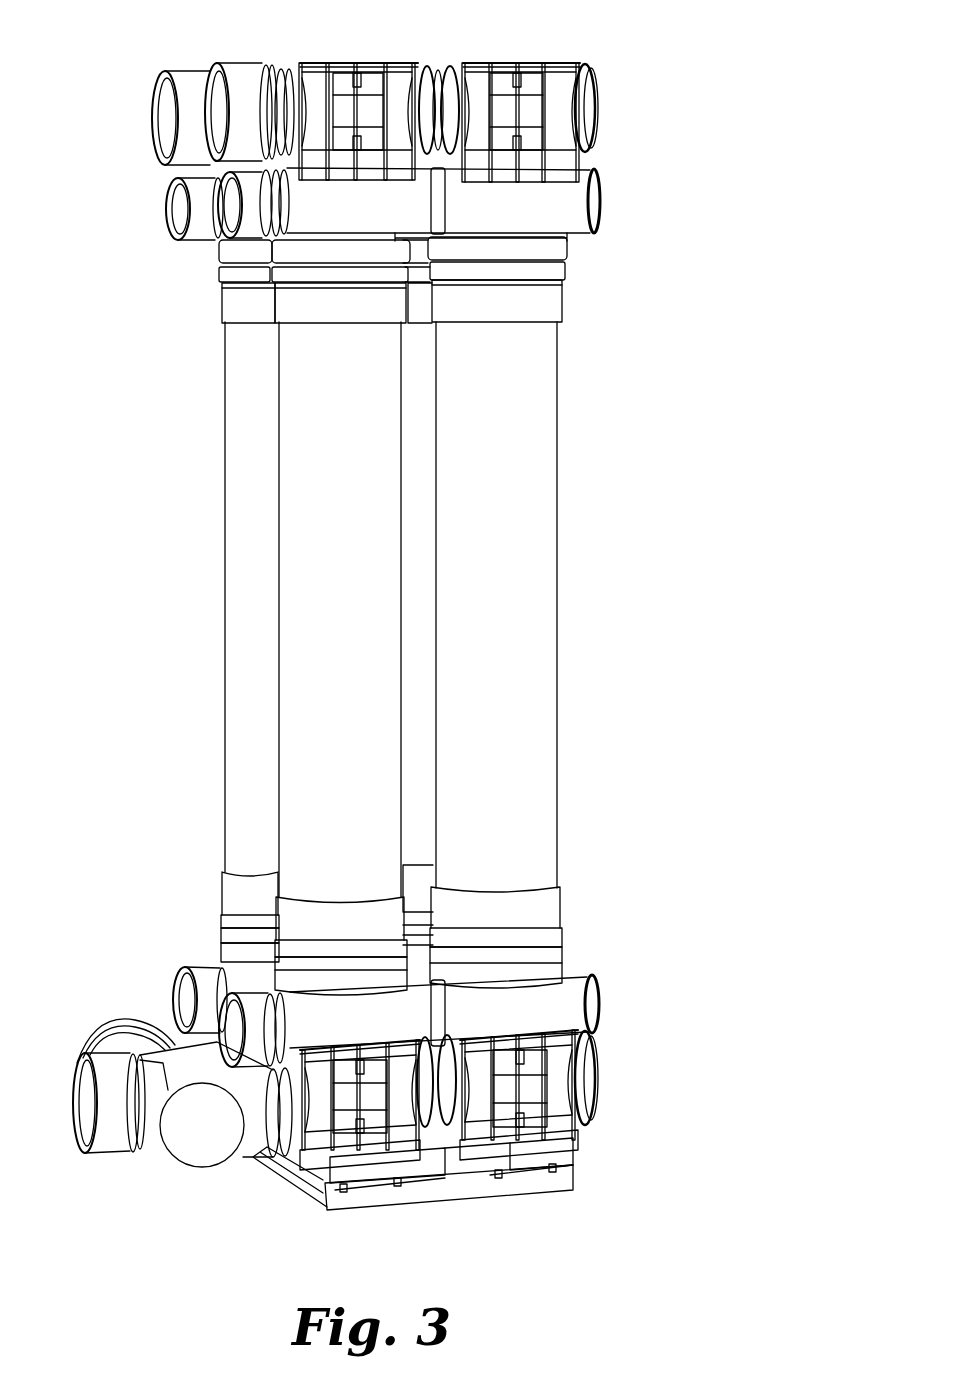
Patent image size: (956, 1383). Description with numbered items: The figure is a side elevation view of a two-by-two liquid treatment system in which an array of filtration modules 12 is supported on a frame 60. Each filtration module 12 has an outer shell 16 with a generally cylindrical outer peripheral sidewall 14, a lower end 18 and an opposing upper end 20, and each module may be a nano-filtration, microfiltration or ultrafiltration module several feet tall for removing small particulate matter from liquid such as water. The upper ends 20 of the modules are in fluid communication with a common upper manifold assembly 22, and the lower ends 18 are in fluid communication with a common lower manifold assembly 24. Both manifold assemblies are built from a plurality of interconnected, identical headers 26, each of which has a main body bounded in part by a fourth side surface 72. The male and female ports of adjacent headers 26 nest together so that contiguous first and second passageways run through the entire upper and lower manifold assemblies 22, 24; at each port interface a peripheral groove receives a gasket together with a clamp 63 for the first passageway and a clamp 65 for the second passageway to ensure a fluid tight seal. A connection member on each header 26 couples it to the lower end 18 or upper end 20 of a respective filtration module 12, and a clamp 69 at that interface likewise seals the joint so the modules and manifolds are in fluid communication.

The filtration module 12 is at (538, 612).
The outer peripheral sidewall 14 is at (538, 490).
The outer shell 16 is at (538, 410).
The lower end 18 is at (547, 940).
The upper end 20 is at (552, 298).
The upper manifold assembly 22 is at (587, 93).
The lower manifold assembly 24 is at (573, 990).
The header 26 is at (388, 63).
The frame 60 is at (317, 1180).
The clamp 63 is at (433, 93).
The clamp 65 is at (440, 190).
The clamp 69 is at (312, 248).
The fourth side surface 72 is at (578, 1056).